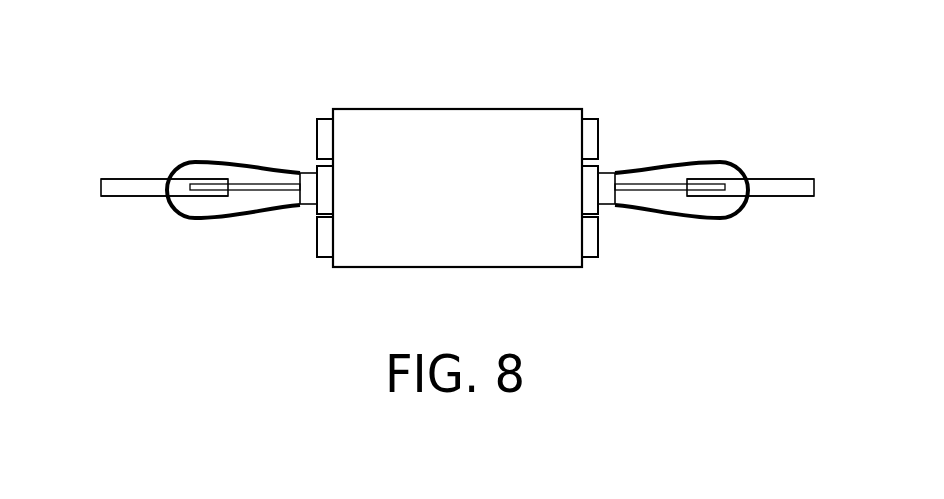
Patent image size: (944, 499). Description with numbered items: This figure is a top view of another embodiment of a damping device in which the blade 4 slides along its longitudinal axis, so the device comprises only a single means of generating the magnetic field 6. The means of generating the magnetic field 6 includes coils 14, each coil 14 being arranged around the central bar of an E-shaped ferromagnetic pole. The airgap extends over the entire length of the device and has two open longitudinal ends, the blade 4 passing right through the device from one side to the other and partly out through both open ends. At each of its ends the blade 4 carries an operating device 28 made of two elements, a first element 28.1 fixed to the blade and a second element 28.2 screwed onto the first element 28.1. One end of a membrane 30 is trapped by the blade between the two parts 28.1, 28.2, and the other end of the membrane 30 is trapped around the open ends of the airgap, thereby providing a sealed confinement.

The means of generating the magnetic field 6 is at (471, 108).
The coil 14 is at (326, 142).
The blade 4 is at (633, 188).
The operating device 28 is at (146, 175).
The first element 28.1 is at (115, 183).
The second element 28.2 is at (177, 192).
The membrane 30 is at (227, 207).